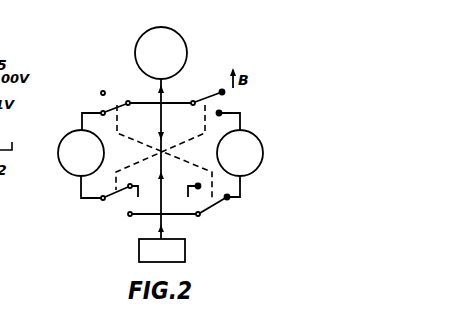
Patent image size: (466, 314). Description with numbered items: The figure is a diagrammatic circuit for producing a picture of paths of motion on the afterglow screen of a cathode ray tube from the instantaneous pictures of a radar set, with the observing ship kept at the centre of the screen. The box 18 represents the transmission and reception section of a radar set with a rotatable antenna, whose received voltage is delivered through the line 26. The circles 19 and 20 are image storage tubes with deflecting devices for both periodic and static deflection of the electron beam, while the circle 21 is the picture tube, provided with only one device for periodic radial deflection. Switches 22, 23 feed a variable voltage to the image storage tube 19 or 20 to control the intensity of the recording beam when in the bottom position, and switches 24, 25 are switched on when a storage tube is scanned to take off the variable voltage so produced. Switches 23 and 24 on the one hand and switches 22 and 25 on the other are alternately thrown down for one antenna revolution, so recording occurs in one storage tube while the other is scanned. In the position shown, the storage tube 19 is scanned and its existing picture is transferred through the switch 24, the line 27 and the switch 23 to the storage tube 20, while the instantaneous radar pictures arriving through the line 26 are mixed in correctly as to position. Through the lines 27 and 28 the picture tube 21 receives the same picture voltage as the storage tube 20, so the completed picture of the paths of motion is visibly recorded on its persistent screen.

The radar set 18 is at (185, 250).
The image storage tube 19 is at (65, 174).
The image storage tube 20 is at (256, 147).
The cathode ray tube 21 is at (177, 49).
The switch 22 is at (118, 196).
The switch 23 is at (210, 208).
The switch 24 is at (111, 104).
The switch 25 is at (208, 92).
The line 26 is at (165, 229).
The line 27 is at (176, 167).
The line 28 is at (154, 90).